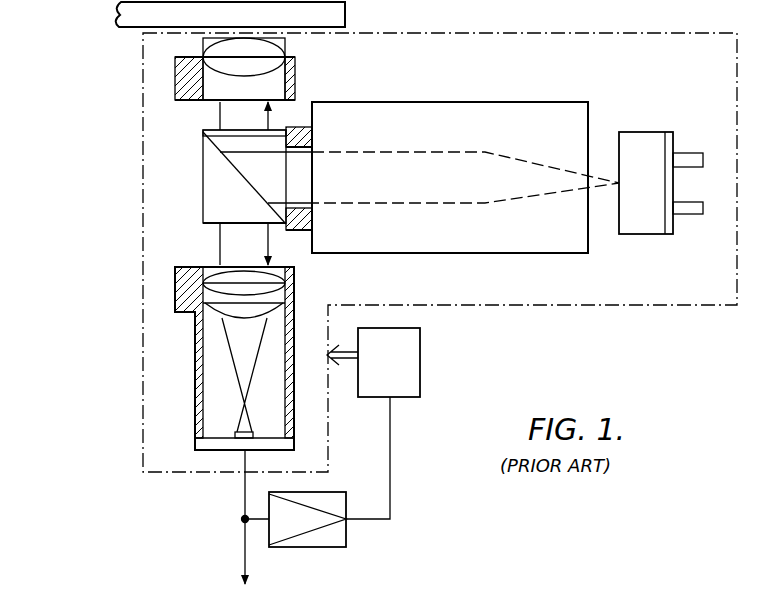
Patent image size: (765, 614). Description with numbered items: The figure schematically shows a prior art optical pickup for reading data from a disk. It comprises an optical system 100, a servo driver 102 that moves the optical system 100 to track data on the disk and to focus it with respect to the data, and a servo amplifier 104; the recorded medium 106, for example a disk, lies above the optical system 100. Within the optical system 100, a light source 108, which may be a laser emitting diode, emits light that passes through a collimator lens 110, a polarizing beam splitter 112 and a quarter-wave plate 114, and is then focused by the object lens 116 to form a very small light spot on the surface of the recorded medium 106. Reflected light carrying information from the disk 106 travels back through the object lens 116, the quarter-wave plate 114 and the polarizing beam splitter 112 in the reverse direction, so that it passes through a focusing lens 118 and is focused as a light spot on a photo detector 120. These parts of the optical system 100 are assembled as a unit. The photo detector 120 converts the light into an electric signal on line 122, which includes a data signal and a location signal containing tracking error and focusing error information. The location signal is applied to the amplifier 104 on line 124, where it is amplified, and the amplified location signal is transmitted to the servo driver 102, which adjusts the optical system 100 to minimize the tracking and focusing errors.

The optical system 100 is at (134, 201).
The servo driver 102 is at (400, 365).
The servo amplifier 104 is at (332, 535).
The recorded medium 106 is at (323, 13).
The light source 108 is at (643, 224).
The collimator lens 110 is at (511, 122).
The polarizing beam splitter 112 is at (210, 188).
The quarter-wave plate 114 is at (232, 134).
The object lens 116 is at (296, 78).
The focusing lens 118 is at (184, 313).
The photo detector 120 is at (242, 440).
The line 122 is at (243, 498).
The line 124 is at (255, 522).